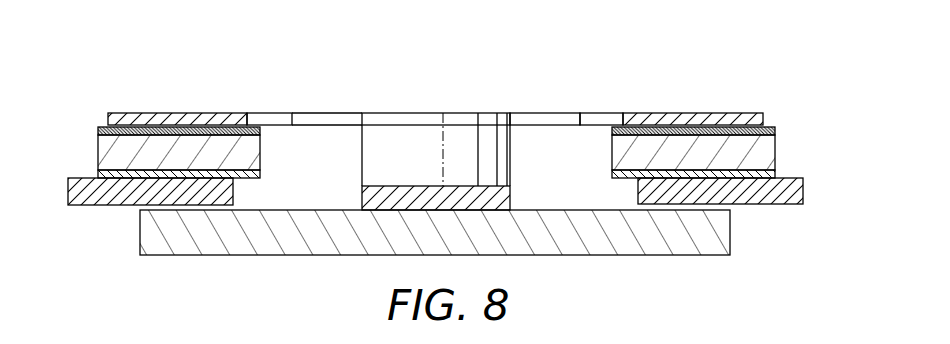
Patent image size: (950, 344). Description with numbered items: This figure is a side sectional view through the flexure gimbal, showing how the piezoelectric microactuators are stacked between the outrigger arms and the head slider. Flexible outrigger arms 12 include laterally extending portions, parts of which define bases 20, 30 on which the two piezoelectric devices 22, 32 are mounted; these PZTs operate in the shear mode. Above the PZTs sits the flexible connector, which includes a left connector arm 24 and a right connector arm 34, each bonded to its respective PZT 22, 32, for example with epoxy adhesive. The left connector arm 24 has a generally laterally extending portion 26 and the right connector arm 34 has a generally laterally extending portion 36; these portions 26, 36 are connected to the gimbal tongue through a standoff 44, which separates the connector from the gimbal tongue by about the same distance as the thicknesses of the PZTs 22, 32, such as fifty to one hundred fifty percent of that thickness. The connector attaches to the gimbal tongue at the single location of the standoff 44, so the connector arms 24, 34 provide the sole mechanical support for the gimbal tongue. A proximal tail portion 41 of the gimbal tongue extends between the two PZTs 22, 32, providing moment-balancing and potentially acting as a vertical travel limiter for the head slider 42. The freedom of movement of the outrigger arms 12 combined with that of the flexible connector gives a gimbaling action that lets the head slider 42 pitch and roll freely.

The flexible outrigger arm 12 is at (108, 205).
The base 20 is at (233, 197).
The piezoelectric device 22 is at (97, 155).
The left connector arm 24 is at (163, 113).
The generally laterally extending portion 26 is at (296, 113).
The base 30 is at (645, 195).
The piezoelectric device 32 is at (775, 150).
The right connector arm 34 is at (668, 113).
The generally laterally extending portion 36 is at (572, 113).
The proximal tail portion 41 is at (372, 197).
The head slider 42 is at (140, 233).
The standoff 44 is at (375, 160).